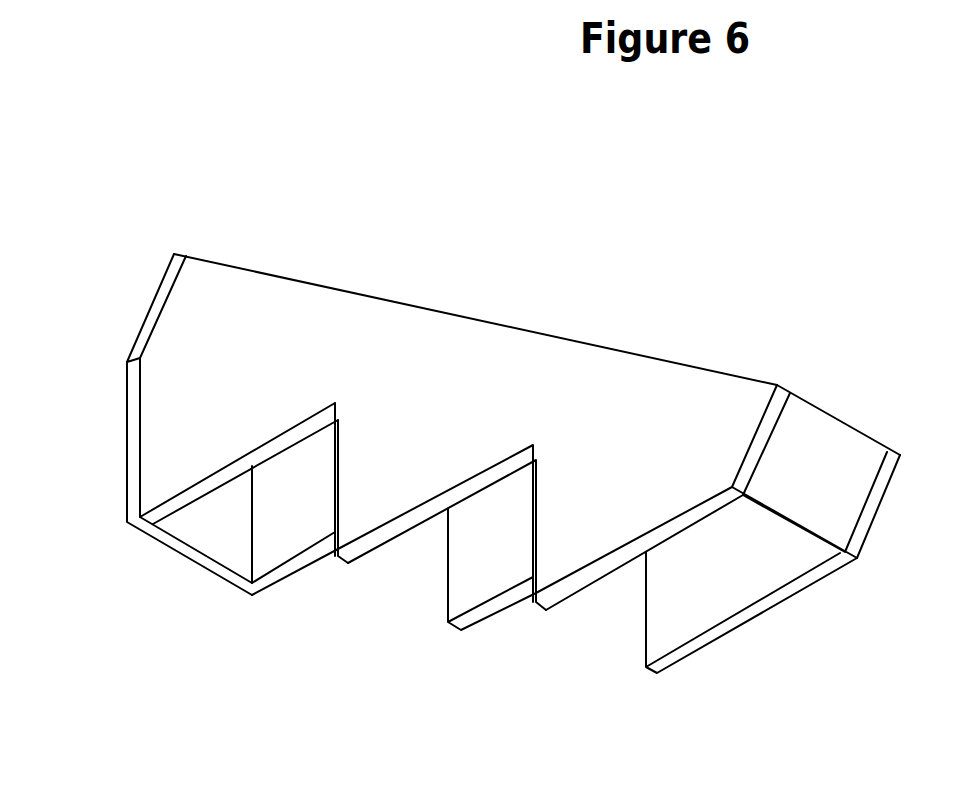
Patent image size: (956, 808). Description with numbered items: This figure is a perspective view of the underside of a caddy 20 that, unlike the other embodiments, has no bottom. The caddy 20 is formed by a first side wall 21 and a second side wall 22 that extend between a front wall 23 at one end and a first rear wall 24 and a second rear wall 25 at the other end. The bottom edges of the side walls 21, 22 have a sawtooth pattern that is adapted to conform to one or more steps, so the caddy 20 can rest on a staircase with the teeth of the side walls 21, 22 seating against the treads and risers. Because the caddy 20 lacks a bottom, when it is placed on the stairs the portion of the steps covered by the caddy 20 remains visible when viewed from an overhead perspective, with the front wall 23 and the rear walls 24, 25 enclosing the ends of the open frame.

The caddy 20 is at (488, 275).
The first side wall 21 is at (240, 378).
The second side wall 22 is at (673, 609).
The front wall 23 is at (830, 450).
The first rear wall 24 is at (149, 312).
The second rear wall 25 is at (127, 417).